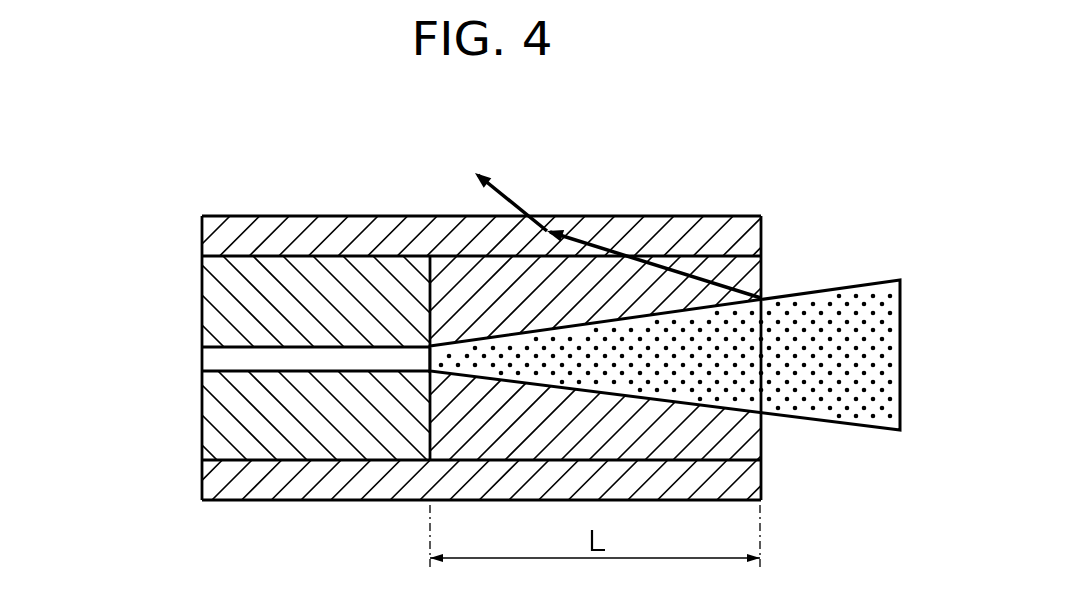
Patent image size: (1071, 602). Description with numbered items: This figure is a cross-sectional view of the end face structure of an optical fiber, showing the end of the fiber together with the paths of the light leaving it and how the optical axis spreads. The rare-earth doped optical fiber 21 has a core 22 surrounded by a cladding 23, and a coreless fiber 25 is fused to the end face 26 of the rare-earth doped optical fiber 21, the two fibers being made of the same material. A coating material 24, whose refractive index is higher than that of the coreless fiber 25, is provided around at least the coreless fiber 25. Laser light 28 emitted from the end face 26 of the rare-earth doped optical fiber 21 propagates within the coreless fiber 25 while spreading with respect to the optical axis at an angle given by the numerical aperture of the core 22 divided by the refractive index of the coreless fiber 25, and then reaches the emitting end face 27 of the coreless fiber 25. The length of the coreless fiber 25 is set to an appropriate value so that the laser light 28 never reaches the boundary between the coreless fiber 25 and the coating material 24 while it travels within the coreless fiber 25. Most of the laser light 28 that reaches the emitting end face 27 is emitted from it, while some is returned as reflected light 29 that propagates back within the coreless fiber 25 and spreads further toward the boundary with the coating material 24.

The rare-earth doped optical fiber 21 is at (253, 358).
The core 22 is at (279, 358).
The cladding 23 is at (223, 297).
The coating material 24 is at (282, 232).
The coreless fiber 25 is at (457, 302).
The end face of the rare-earth doped optical fiber 26 is at (423, 283).
The emitting end face of the coreless fiber 27 is at (762, 436).
The laser light 28 is at (833, 313).
The reflected light 29 is at (582, 250).